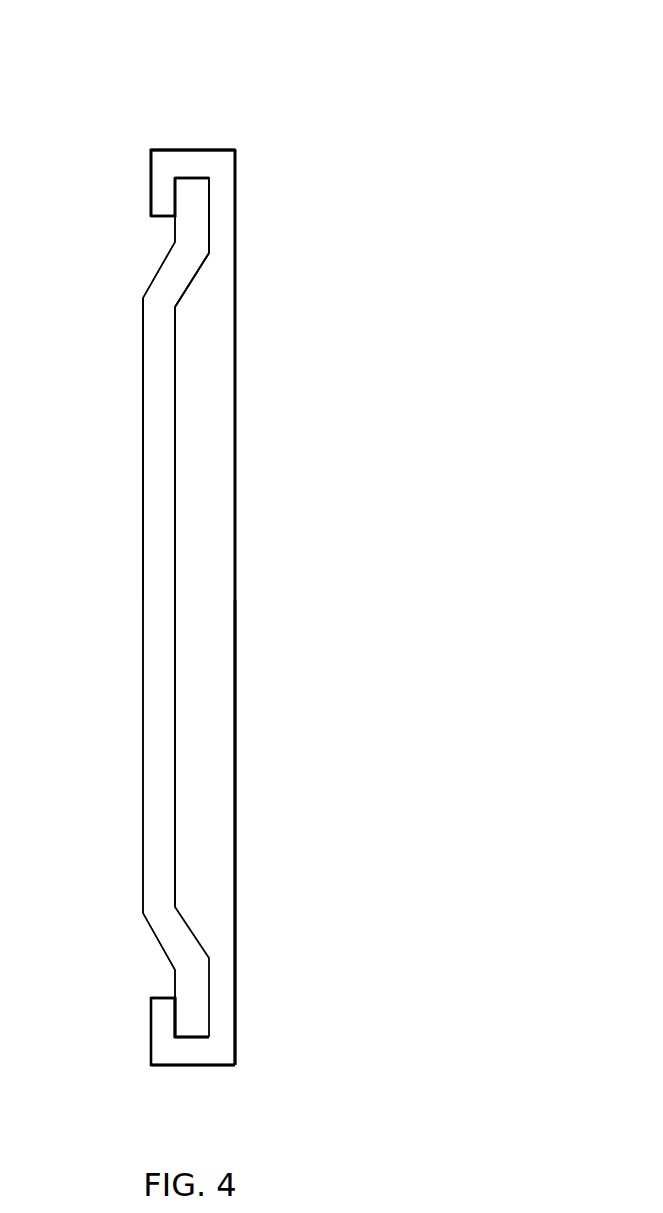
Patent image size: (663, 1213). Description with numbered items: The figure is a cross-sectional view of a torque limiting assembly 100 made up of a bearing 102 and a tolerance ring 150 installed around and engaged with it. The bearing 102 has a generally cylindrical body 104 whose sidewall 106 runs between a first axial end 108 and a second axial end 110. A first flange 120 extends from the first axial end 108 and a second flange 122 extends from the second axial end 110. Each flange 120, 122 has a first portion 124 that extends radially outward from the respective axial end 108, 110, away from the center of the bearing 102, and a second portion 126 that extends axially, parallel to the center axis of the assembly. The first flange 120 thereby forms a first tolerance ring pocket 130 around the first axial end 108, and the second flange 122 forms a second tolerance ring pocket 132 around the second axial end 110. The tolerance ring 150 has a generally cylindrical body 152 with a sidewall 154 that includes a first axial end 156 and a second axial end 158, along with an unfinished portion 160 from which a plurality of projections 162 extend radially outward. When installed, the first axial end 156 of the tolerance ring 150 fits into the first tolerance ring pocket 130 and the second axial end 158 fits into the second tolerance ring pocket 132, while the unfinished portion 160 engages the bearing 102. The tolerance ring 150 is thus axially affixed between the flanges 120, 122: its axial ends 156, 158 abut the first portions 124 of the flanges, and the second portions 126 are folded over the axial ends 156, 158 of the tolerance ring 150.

The torque limiting assembly 100 is at (265, 40).
The bearing 102 is at (170, 138).
The body 104 is at (212, 425).
The sidewall 106 is at (235, 860).
The first axial end 108 is at (220, 164).
The second axial end 110 is at (220, 1028).
The first flange 120 is at (150, 158).
The second flange 122 is at (152, 1066).
The first portion 124 is at (196, 157).
The second portion 126 is at (163, 180).
The first tolerance ring pocket 130 is at (193, 207).
The second tolerance ring pocket 132 is at (193, 1015).
The tolerance ring 150 is at (162, 752).
The body 152 is at (183, 465).
The sidewall 154 is at (193, 255).
The first axial end 156 is at (177, 232).
The second axial end 158 is at (200, 982).
The unfinished portion 160 is at (177, 239).
The projections 162 is at (160, 423).